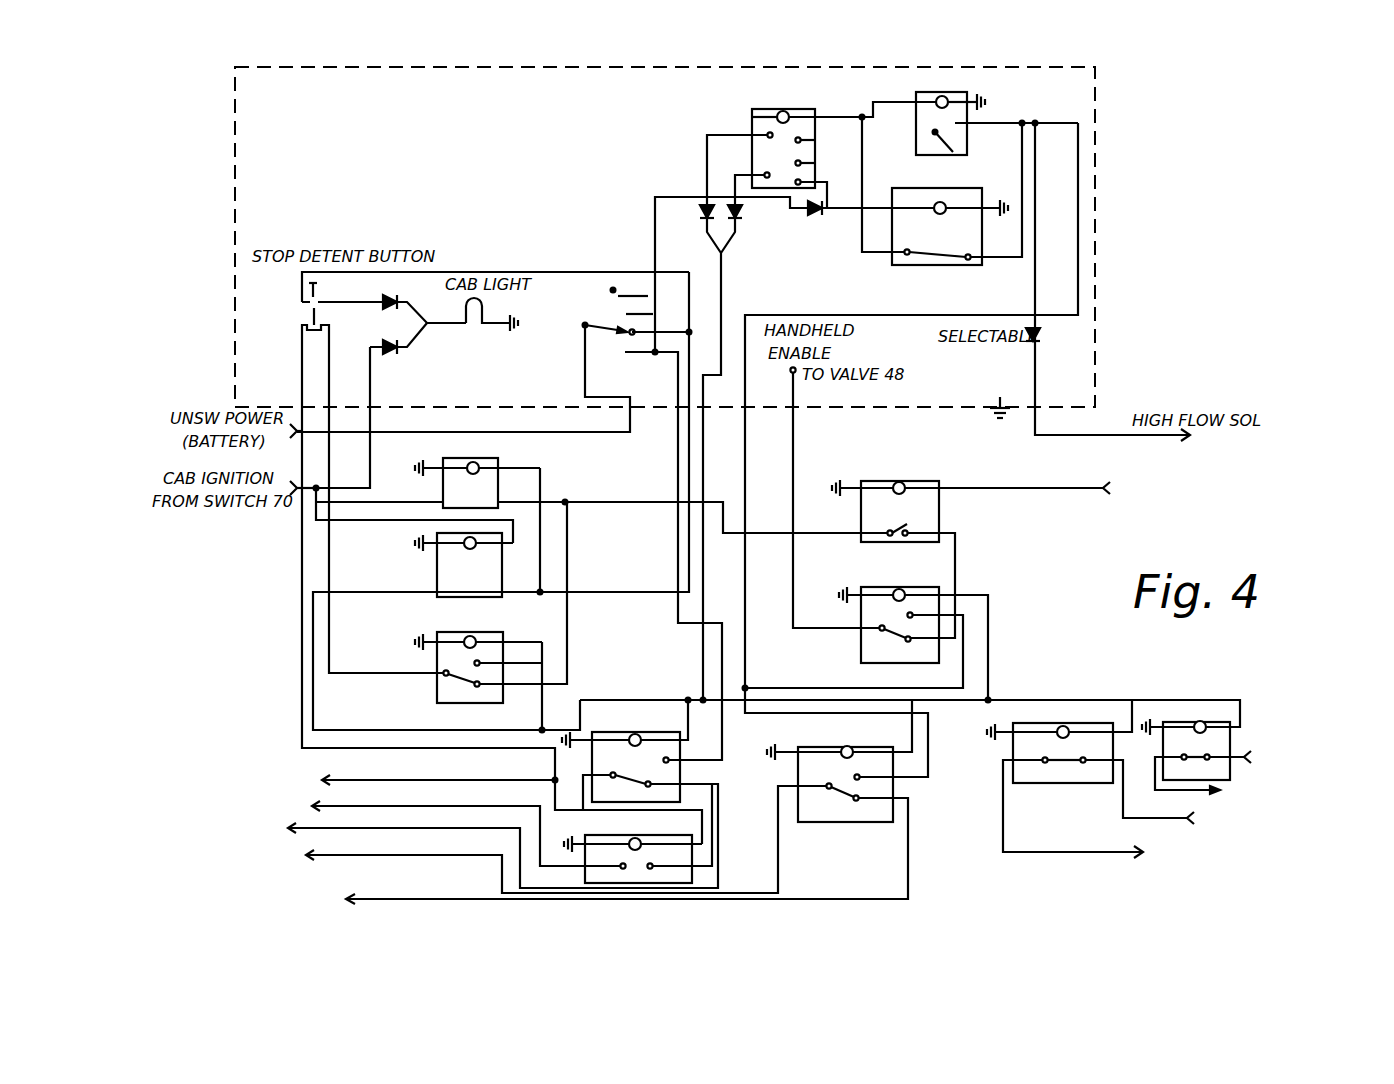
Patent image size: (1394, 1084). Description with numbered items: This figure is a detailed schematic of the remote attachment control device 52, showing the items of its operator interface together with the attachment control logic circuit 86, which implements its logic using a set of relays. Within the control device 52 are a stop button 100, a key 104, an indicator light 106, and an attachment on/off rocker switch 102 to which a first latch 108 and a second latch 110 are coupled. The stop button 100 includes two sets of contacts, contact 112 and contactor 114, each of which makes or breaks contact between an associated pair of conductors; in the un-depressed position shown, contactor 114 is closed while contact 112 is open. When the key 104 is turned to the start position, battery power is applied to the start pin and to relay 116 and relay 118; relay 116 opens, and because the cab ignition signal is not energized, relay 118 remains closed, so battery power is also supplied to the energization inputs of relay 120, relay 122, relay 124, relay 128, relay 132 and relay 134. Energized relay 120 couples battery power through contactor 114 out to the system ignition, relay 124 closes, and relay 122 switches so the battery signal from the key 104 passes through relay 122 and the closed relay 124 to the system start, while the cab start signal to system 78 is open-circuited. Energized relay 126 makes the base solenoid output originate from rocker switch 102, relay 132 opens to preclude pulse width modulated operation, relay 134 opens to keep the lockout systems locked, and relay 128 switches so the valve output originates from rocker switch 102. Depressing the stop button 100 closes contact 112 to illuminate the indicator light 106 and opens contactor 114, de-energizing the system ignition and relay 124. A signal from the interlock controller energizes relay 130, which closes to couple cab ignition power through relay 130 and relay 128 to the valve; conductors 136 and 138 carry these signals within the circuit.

The remote attachment control device 52 is at (235, 167).
The attachment control logic circuit 86 is at (248, 561).
The stop button 100 is at (320, 287).
The rocker switch 102 is at (770, 112).
The key 104 is at (586, 330).
The indicator light 106 is at (486, 303).
The first latch 108 is at (908, 266).
The second latch 110 is at (967, 140).
The contact 112 is at (300, 292).
The contactor 114 is at (308, 322).
The relay 116 is at (500, 462).
The relay 118 is at (437, 563).
The relay 120 is at (437, 689).
The relay 122 is at (682, 770).
The relay 124 is at (694, 878).
The relay 126 is at (820, 823).
The relay 128 is at (861, 660).
The relay 130 is at (861, 512).
The relay 132 is at (1036, 784).
The relay 134 is at (1240, 710).
The conductor 136 is at (516, 502).
The conductor 138 is at (373, 503).
The system 78 is at (184, 840).